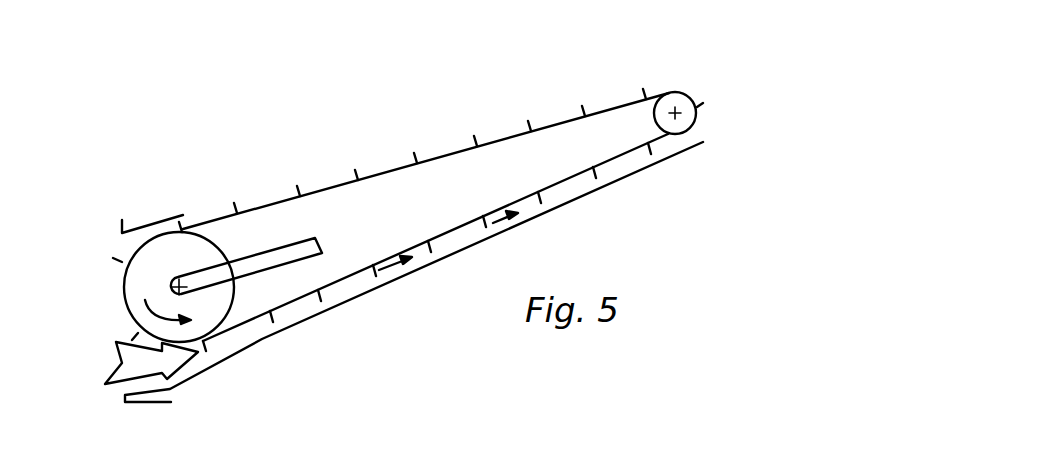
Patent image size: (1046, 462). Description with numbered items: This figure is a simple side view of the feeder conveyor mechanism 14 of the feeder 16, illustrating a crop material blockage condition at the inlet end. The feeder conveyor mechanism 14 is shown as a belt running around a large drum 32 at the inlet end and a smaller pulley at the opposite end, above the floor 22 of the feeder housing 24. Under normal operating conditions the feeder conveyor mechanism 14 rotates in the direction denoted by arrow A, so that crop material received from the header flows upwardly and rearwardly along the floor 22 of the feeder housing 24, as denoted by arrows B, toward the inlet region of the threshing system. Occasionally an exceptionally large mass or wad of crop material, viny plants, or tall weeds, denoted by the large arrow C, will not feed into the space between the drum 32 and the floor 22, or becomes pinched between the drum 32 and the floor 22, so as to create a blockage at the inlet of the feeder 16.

The feeder 16 is at (585, 79).
The feeder conveyor mechanism 14 is at (437, 158).
The drum 32 is at (203, 237).
The floor 22 is at (442, 268).
The feeder housing 24 is at (622, 170).
The arrow A (direction of rotation) A is at (130, 313).
The arrows B (crop flow direction) B is at (389, 269).
The arrow C (crop material mass) C is at (113, 387).